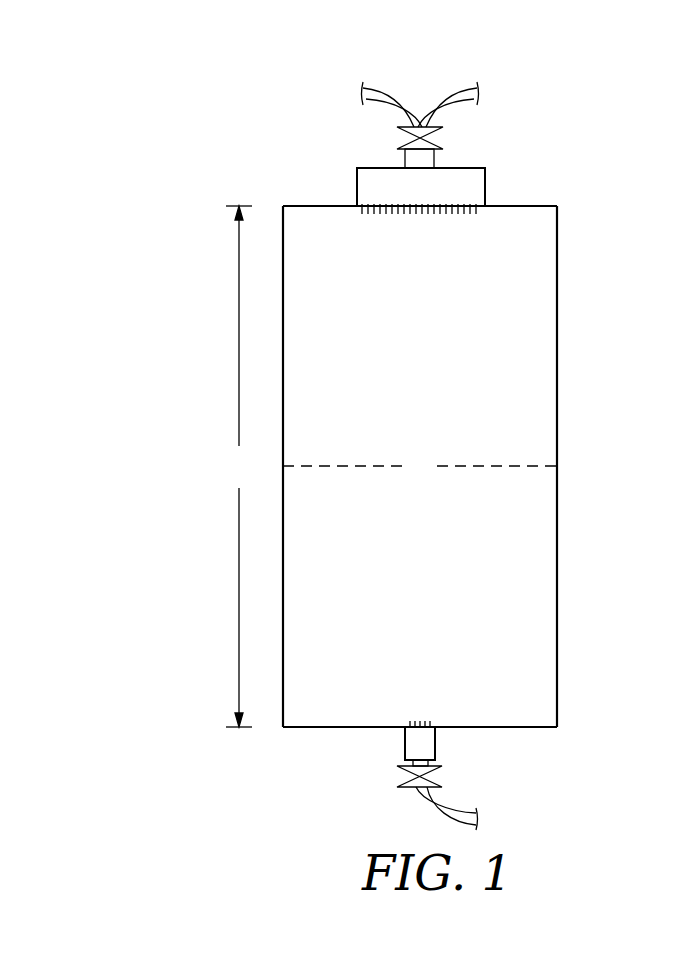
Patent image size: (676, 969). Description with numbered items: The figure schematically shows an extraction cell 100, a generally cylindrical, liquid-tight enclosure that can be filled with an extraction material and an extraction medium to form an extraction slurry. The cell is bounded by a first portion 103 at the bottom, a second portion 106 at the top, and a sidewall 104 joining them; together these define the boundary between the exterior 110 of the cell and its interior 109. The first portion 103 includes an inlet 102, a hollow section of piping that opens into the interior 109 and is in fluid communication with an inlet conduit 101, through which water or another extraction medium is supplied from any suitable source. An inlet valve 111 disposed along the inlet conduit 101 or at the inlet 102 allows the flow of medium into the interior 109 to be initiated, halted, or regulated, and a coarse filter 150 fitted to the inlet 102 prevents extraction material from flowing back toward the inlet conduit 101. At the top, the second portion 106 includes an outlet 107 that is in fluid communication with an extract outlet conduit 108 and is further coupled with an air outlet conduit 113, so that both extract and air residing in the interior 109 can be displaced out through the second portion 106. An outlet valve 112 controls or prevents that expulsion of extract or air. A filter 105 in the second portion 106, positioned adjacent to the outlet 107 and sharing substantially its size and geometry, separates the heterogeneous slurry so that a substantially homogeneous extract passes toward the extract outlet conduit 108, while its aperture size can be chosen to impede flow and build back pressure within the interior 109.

The extraction cell 100 is at (68, 361).
The inlet conduit 101 is at (452, 808).
The inlet 102 is at (402, 745).
The first portion 103 is at (540, 728).
The sidewall 104 is at (559, 648).
The filter 105 is at (472, 220).
The second portion 106 is at (530, 223).
The outlet 107 is at (487, 174).
The extract outlet conduit 108 is at (387, 91).
The interior 109 is at (534, 615).
The exterior 110 is at (578, 550).
The inlet valve 111 is at (404, 790).
The outlet valve 112 is at (445, 140).
The air outlet conduit 113 is at (455, 89).
The coarse filter 150 is at (430, 708).